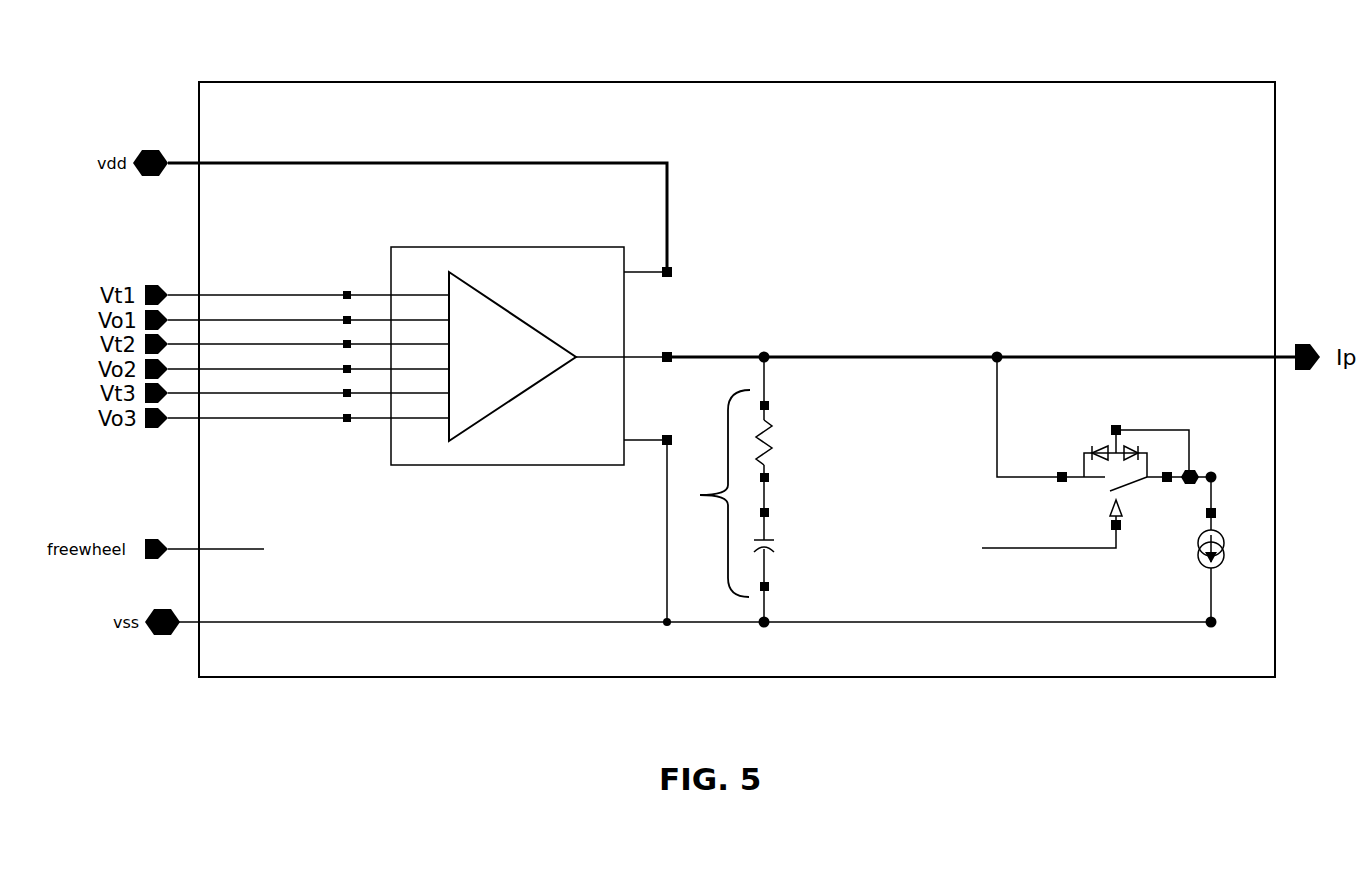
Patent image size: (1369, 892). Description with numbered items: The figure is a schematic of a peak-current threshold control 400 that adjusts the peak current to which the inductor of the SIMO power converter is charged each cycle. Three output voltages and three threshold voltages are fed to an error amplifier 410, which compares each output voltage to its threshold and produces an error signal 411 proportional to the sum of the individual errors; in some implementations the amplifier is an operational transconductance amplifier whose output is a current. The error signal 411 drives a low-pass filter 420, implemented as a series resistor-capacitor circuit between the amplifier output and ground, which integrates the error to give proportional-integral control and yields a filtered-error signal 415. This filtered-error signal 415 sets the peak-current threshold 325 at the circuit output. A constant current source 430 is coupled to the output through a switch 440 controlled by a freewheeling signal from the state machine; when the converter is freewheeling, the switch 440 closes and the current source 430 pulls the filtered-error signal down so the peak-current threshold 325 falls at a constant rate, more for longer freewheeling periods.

The peak-current threshold control 400 is at (762, 166).
The error amplifier 410 is at (512, 338).
The error signal 411 is at (711, 350).
The filtered-error signal 415 is at (913, 350).
The peak-current threshold 325 is at (1185, 350).
The low-pass filter 420 is at (688, 496).
The constant current source 430 is at (1196, 551).
The switch 440 is at (1075, 470).